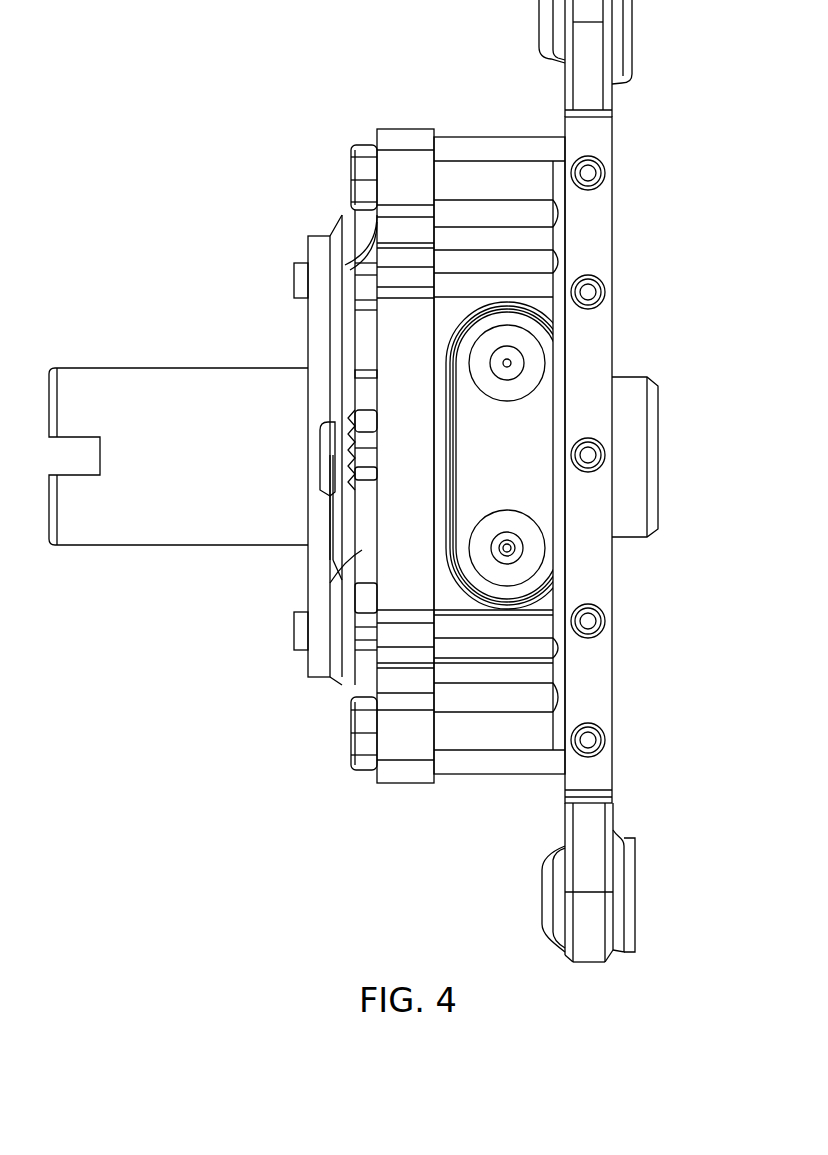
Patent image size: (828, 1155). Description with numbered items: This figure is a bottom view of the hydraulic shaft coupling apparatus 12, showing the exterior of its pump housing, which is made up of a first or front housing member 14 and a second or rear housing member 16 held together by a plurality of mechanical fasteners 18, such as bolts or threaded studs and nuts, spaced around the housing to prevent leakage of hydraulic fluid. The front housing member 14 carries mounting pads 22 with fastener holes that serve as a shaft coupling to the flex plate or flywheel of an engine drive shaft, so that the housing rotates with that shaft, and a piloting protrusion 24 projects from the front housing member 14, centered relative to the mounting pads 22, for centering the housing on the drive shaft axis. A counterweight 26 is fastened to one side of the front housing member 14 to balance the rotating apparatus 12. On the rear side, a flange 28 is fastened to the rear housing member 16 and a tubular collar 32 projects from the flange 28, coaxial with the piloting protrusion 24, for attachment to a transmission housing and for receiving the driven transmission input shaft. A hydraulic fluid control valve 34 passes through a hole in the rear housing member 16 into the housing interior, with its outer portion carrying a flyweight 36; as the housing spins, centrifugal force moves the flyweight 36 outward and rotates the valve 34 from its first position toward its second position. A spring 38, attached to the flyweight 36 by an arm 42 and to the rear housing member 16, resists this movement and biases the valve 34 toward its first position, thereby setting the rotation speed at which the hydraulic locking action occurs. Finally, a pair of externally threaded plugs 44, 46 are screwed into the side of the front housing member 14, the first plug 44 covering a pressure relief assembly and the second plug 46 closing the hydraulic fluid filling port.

The hydraulic shaft coupling apparatus 12 is at (136, 240).
The first or front housing member 14 is at (506, 137).
The second or rear housing member 16 is at (410, 128).
The mechanical fasteners 18 is at (365, 150).
The mounting pads 22 is at (633, 18).
The piloting protrusion 24 is at (635, 476).
The counterweight 26 is at (598, 683).
The flange 28 is at (305, 665).
The tubular collar 32 is at (181, 383).
The hydraulic fluid control valve 34 is at (355, 438).
The flyweight 36 is at (330, 554).
The spring 38 is at (362, 330).
The arm 42 is at (348, 392).
The first plug 44 is at (530, 556).
The second plug 46 is at (527, 357).